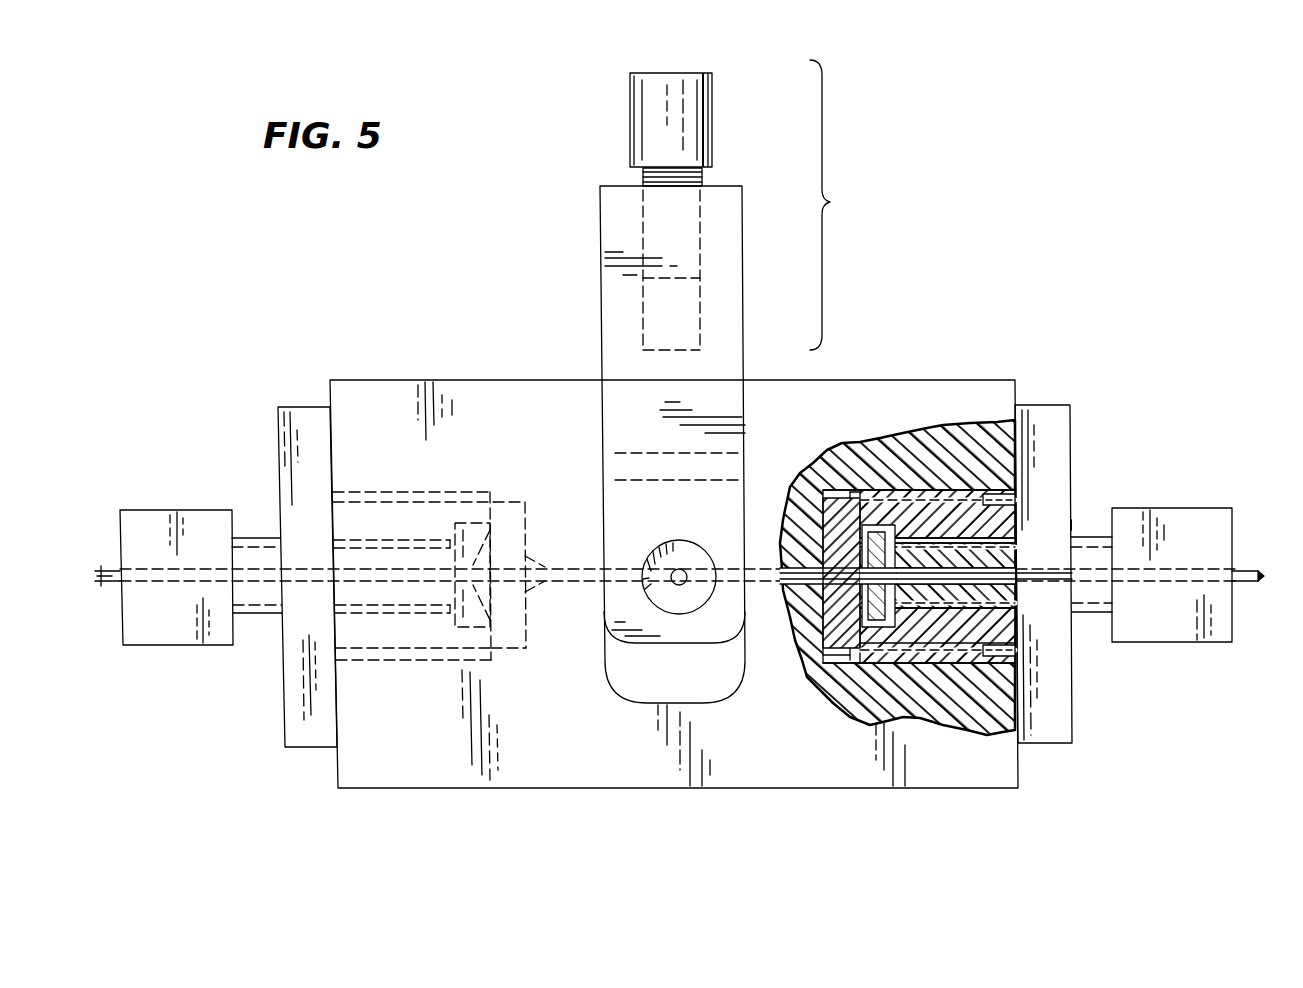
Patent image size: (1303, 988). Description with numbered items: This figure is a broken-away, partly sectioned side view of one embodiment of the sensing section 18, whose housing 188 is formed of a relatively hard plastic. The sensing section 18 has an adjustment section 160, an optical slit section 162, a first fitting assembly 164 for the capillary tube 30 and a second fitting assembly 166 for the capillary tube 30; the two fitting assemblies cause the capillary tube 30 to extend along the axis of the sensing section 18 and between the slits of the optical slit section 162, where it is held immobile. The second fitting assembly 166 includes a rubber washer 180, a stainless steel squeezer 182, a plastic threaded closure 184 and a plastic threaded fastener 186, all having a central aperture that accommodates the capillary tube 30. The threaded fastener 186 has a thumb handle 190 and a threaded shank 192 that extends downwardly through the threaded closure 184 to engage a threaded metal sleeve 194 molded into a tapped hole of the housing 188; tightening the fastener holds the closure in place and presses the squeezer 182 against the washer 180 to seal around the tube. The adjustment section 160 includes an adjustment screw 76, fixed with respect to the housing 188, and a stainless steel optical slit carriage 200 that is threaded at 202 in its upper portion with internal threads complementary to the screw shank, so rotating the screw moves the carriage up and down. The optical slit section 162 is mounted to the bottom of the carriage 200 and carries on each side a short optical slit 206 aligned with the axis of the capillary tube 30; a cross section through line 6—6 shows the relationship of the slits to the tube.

The section line 6— 6 is at (605, 43).
The sensing section 18 is at (368, 352).
The capillary tube 30 is at (118, 569).
The adjustment screw 76 is at (710, 121).
The adjustment section 160 is at (761, 205).
The optical slit section 162 is at (597, 562).
The first fitting assembly 164 is at (180, 498).
The second fitting assembly 166 is at (1079, 518).
The rubber washer 180 is at (826, 478).
The stainless steel squeezer 182 is at (880, 530).
The threaded closure 184 is at (1055, 475).
The threaded fastener 186 is at (1205, 517).
The housing 188 is at (545, 393).
The thumb handle 190 is at (1167, 625).
The threaded shank 192 is at (1087, 540).
The threaded metal sleeve 194 is at (960, 510).
The optical slit carriage 200 is at (594, 293).
The internal threads 202 is at (660, 220).
The optical slit 206 is at (680, 569).